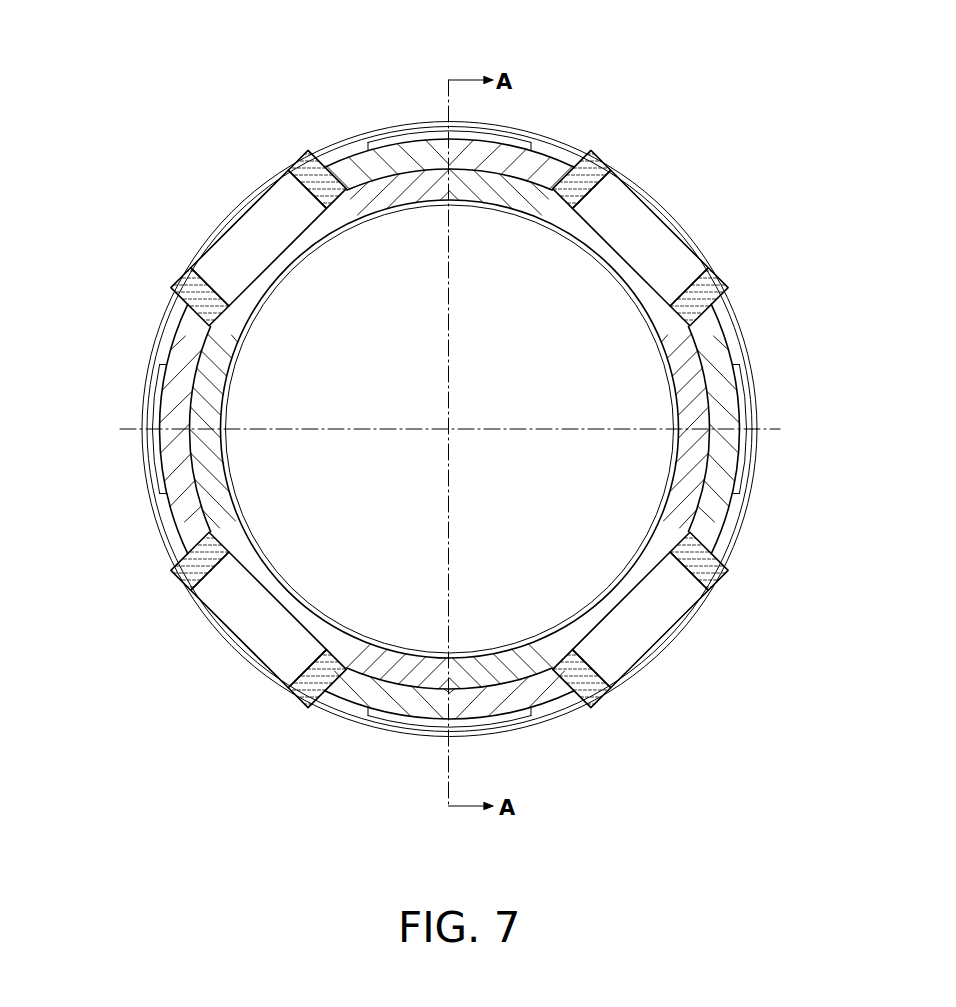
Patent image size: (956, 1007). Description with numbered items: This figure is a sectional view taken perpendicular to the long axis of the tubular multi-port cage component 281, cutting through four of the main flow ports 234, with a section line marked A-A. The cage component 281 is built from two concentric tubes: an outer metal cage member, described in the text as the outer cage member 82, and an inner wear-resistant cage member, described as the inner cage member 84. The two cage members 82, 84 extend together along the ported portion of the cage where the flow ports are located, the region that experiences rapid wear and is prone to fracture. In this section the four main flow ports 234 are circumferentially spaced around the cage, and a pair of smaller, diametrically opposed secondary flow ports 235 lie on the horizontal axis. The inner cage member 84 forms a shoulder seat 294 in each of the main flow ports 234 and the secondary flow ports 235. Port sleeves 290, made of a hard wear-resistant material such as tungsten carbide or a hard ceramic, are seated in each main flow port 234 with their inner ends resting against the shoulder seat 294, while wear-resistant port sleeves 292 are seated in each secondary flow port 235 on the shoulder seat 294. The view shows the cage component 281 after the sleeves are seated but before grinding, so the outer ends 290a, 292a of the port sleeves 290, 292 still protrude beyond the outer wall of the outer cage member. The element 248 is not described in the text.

The tubular outer cage member 82 is at (487, 206).
The tubular inner cage member 84 is at (555, 157).
The main flow ports 234 is at (260, 240).
The secondary flow ports 235 is at (750, 437).
The bottom segment 248 is at (345, 720).
The multi-port cage component 281 is at (377, 118).
The port sleeves 290 is at (497, 135).
The protruding outer ends of the port sleeves 290a is at (305, 157).
The wear resistant port sleeves 292 is at (750, 395).
The protruding outer ends of the port sleeves 292a is at (737, 366).
The shoulder seat 294 is at (227, 330).